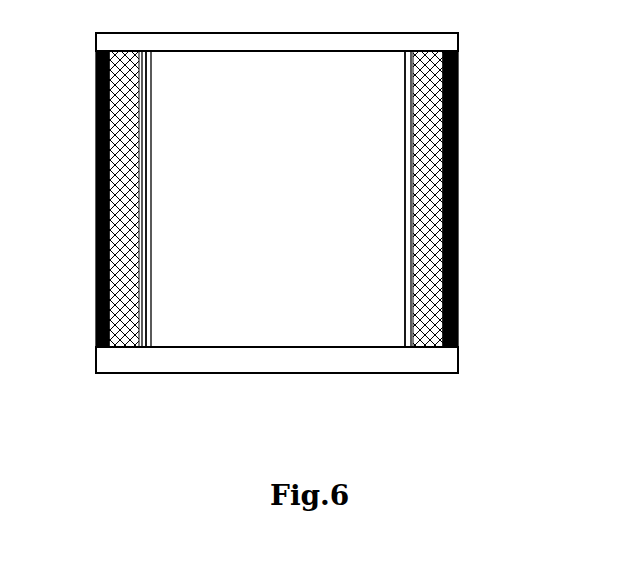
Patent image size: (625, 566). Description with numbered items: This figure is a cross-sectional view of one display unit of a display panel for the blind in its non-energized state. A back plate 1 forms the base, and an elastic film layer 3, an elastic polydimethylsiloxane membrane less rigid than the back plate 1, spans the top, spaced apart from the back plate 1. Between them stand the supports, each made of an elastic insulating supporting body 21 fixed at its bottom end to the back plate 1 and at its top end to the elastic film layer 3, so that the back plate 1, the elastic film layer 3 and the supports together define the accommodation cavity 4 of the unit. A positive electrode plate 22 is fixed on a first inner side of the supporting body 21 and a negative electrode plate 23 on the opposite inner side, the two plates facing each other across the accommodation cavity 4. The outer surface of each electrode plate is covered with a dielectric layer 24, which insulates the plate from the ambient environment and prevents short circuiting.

The back plate 1 is at (443, 357).
The elastic film layer 3 is at (388, 40).
The accommodation cavity 4 is at (329, 120).
The supporting body 21 is at (457, 157).
The positive electrode plate 22 is at (433, 232).
The negative electrode plate 23 is at (120, 208).
The dielectric layer 24 is at (403, 288).